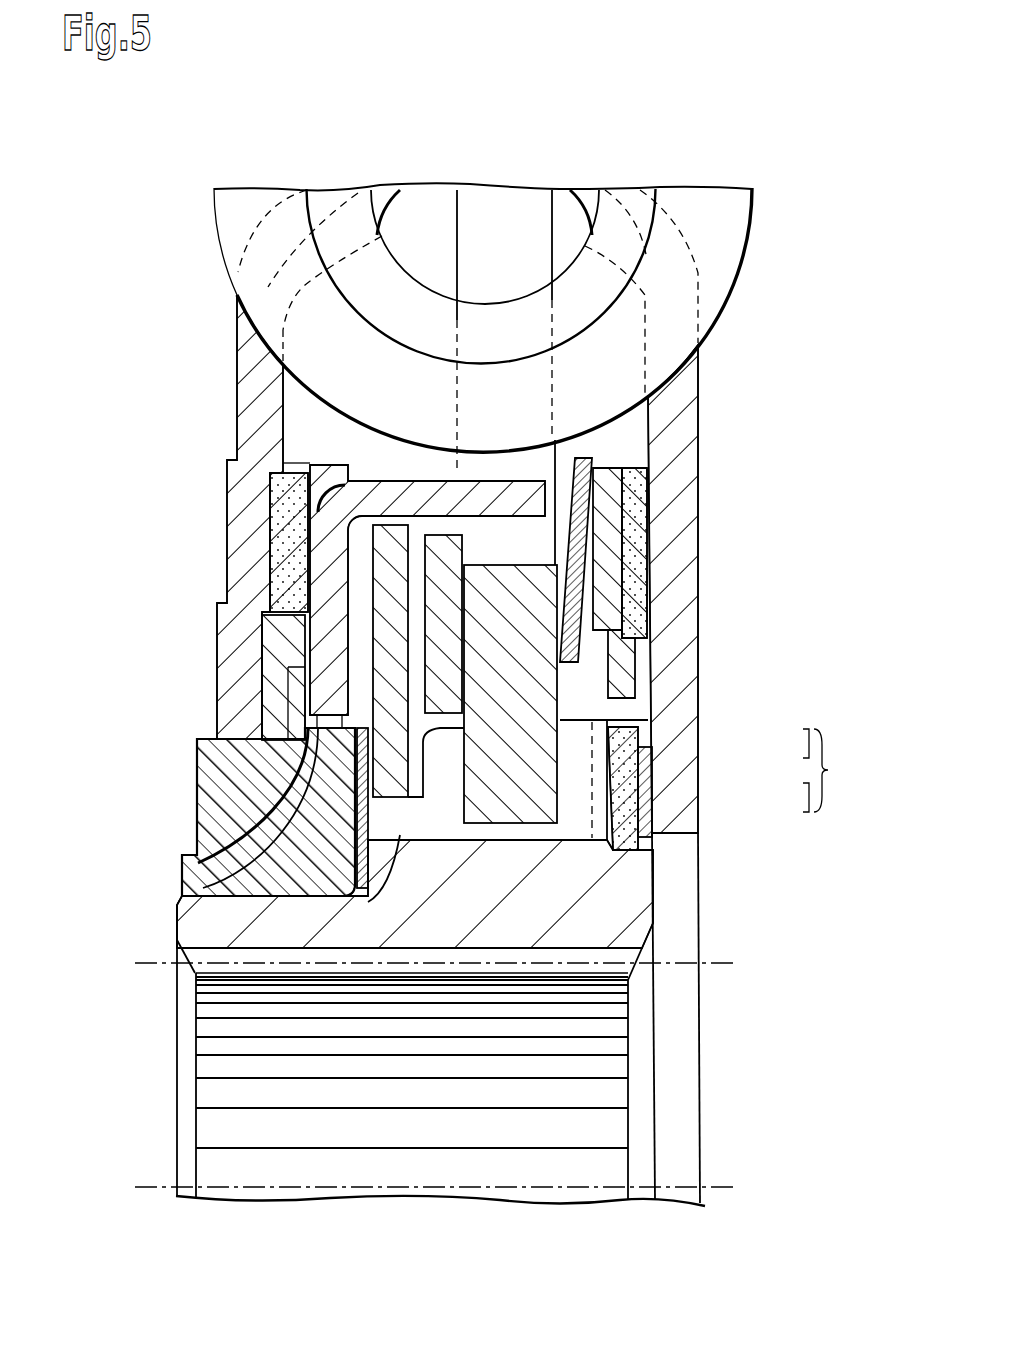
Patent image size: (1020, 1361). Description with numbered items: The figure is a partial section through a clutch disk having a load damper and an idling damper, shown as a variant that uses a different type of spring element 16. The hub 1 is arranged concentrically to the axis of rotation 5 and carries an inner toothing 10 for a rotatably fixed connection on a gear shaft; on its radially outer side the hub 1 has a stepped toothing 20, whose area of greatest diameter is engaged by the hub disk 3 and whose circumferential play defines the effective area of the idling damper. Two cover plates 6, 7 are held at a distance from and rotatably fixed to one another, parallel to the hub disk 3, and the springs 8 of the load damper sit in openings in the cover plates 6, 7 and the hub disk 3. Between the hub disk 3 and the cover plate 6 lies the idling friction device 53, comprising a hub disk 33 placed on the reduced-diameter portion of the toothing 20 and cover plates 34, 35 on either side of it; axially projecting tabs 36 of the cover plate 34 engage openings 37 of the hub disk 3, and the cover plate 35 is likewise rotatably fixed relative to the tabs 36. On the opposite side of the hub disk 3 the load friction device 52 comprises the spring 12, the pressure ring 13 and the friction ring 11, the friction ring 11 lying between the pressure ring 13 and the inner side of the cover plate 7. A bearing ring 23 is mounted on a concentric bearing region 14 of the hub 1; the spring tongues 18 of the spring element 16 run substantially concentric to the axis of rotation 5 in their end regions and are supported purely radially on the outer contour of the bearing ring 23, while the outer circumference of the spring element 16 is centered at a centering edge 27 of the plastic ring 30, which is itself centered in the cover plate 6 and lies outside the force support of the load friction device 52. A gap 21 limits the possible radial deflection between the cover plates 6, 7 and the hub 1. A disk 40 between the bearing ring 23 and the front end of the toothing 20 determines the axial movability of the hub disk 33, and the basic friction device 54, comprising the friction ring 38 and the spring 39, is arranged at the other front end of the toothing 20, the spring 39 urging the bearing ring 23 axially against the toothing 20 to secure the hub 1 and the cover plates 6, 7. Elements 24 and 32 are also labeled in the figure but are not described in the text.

The hub 1 is at (633, 893).
The hub disk 3 is at (538, 798).
The axis of rotation 5 is at (740, 1187).
The cover plate 6 is at (238, 335).
The cover plate 7 is at (677, 402).
The springs 8 is at (633, 238).
The inner toothing 10 is at (590, 978).
The friction ring 11 is at (637, 557).
The spring 12 is at (600, 475).
The pressure ring 13 is at (635, 652).
The bearing region 14 is at (210, 908).
The spring element 16 is at (233, 836).
The spring tongues 18 is at (205, 887).
The toothing 20 is at (285, 978).
The gap 21 is at (180, 857).
The bearing ring 23 is at (205, 899).
The annular gap 24 is at (310, 700).
The centering edge 27 is at (290, 652).
The plastic ring 30 is at (250, 758).
The seal 32 is at (272, 482).
The hub disk 33 is at (385, 612).
The cover plate 34 is at (330, 548).
The cover plate 35 is at (452, 697).
The tabs 36 is at (297, 462).
The openings 37 is at (530, 533).
The friction ring 38 is at (653, 742).
The spring 39 is at (653, 797).
The disk 40 is at (290, 784).
The load friction device 52 is at (623, 458).
The idling friction device 53 is at (355, 420).
The basic friction device 54 is at (832, 770).